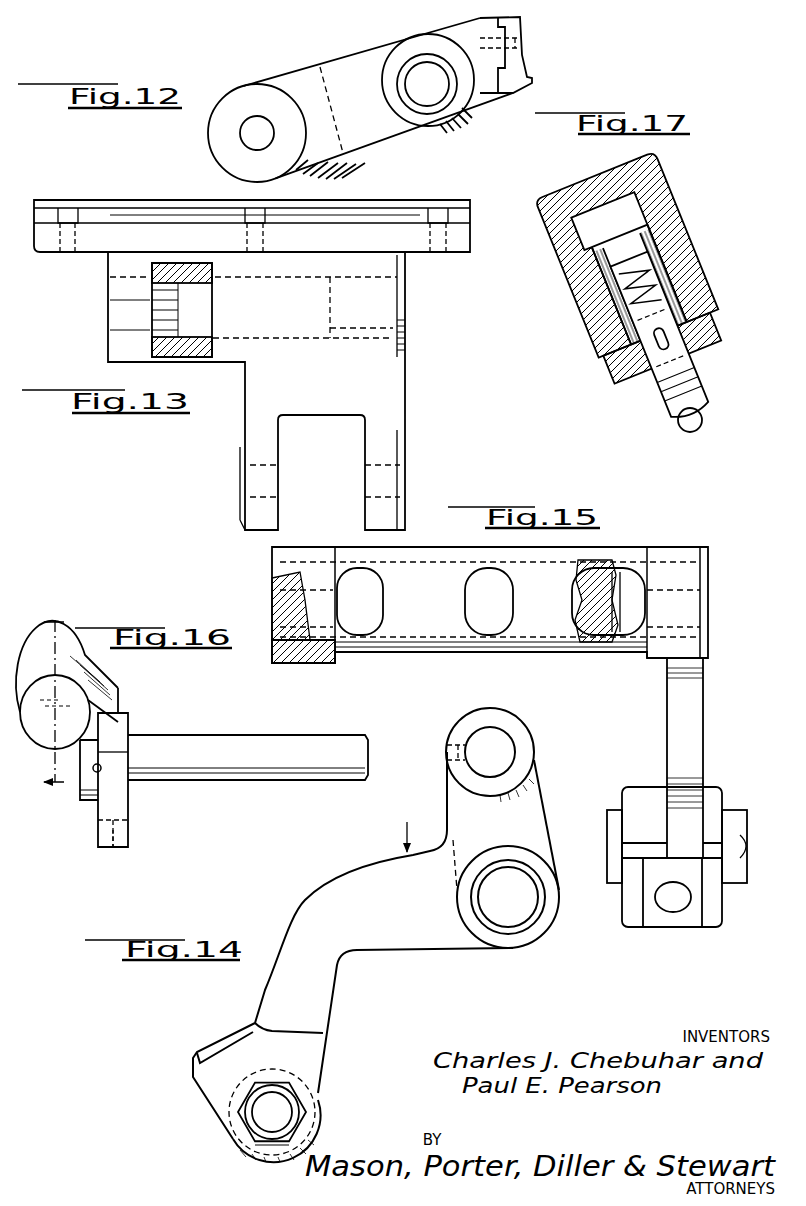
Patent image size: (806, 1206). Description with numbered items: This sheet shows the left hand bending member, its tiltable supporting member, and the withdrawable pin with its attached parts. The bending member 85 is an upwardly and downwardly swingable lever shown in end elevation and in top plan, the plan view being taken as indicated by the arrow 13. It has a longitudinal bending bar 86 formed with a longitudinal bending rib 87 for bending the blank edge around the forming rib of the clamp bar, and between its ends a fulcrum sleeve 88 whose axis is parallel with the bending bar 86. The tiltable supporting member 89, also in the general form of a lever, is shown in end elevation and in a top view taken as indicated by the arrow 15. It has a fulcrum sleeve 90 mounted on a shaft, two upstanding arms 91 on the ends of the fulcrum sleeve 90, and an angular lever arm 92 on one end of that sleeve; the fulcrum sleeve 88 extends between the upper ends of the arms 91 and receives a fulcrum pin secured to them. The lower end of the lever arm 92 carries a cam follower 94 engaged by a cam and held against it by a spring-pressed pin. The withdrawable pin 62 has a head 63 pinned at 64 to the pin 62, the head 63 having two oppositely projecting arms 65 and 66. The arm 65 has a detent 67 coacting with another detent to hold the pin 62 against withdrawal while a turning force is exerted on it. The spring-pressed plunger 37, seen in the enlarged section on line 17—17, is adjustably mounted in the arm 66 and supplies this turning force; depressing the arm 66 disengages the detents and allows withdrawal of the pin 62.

In FIG. 12, the arrow 13 is at (327, 64).
In FIG. 12, the bending member 85 is at (299, 70).
In FIG. 13, the bending member 85 is at (408, 410).
In FIG. 12, the fulcrum sleeve 88 is at (421, 54).
In FIG. 13, the fulcrum sleeve 88 is at (199, 360).
In FIG. 12, the bending bar 86 is at (518, 30).
In FIG. 13, the bending bar 86 is at (466, 213).
In FIG. 12, the bending rib 87 is at (532, 82).
In FIG. 13, the bending rib 87 is at (424, 206).
In FIG. 17, the arm 66 is at (692, 270).
In FIG. 16, the arm 66 is at (99, 687).
In FIG. 17, the spring-pressed plunger 37 is at (690, 432).
In FIG. 15, the tiltable supporting member 89 is at (713, 606).
In FIG. 14, the tiltable supporting member 89 is at (556, 861).
In FIG. 15, the fulcrum sleeve 90 is at (428, 651).
In FIG. 14, the fulcrum sleeve 90 is at (527, 938).
In FIG. 15, the upstanding arms 91 is at (295, 586).
In FIG. 14, the upstanding arms 91 is at (528, 798).
In FIG. 15, the angular lever arm 92 is at (698, 753).
In FIG. 14, the angular lever arm 92 is at (326, 997).
In FIG. 14, the cam follower 94 is at (232, 1136).
In FIG. 16, the pin 62 is at (262, 726).
In FIG. 16, the head 63 is at (105, 757).
In FIG. 16, the pin connection 64 is at (101, 771).
In FIG. 16, the arm 65 is at (108, 806).
In FIG. 16, the detent 67 is at (120, 850).
In FIG. 14, the arrow 15 is at (402, 822).
In FIG. 16, the section line 17— 17 is at (55, 703).